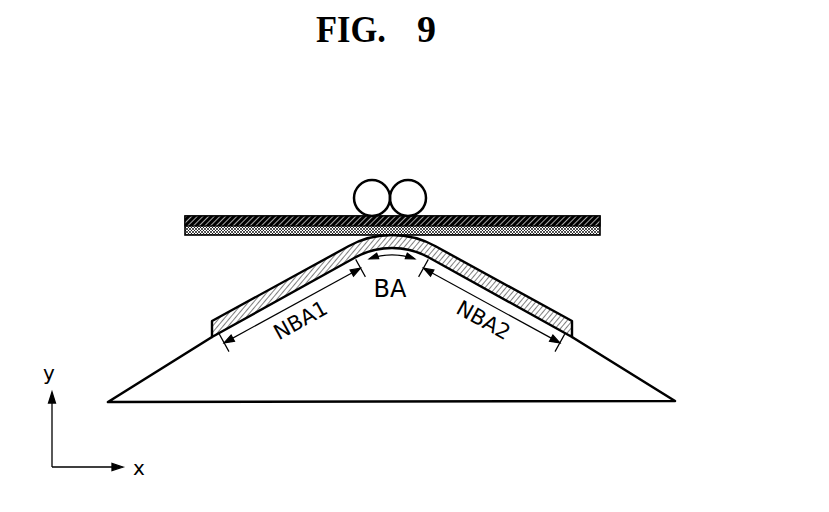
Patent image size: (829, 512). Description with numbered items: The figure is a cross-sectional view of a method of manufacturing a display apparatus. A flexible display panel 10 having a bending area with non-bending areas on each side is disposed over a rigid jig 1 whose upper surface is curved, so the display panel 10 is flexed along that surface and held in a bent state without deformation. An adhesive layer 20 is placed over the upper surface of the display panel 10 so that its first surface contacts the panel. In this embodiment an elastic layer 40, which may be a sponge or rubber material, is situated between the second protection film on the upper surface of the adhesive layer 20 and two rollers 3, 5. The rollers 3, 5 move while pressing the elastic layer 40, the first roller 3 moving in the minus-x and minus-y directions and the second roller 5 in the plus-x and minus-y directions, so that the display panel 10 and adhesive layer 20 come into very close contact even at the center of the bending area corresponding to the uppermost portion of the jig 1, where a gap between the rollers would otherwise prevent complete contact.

The jig 1 is at (481, 397).
The roller 3 is at (366, 191).
The roller 5 is at (414, 189).
The flexible display panel 10 is at (530, 297).
The adhesive layer 20 is at (600, 228).
The elastic layer 40 is at (548, 215).